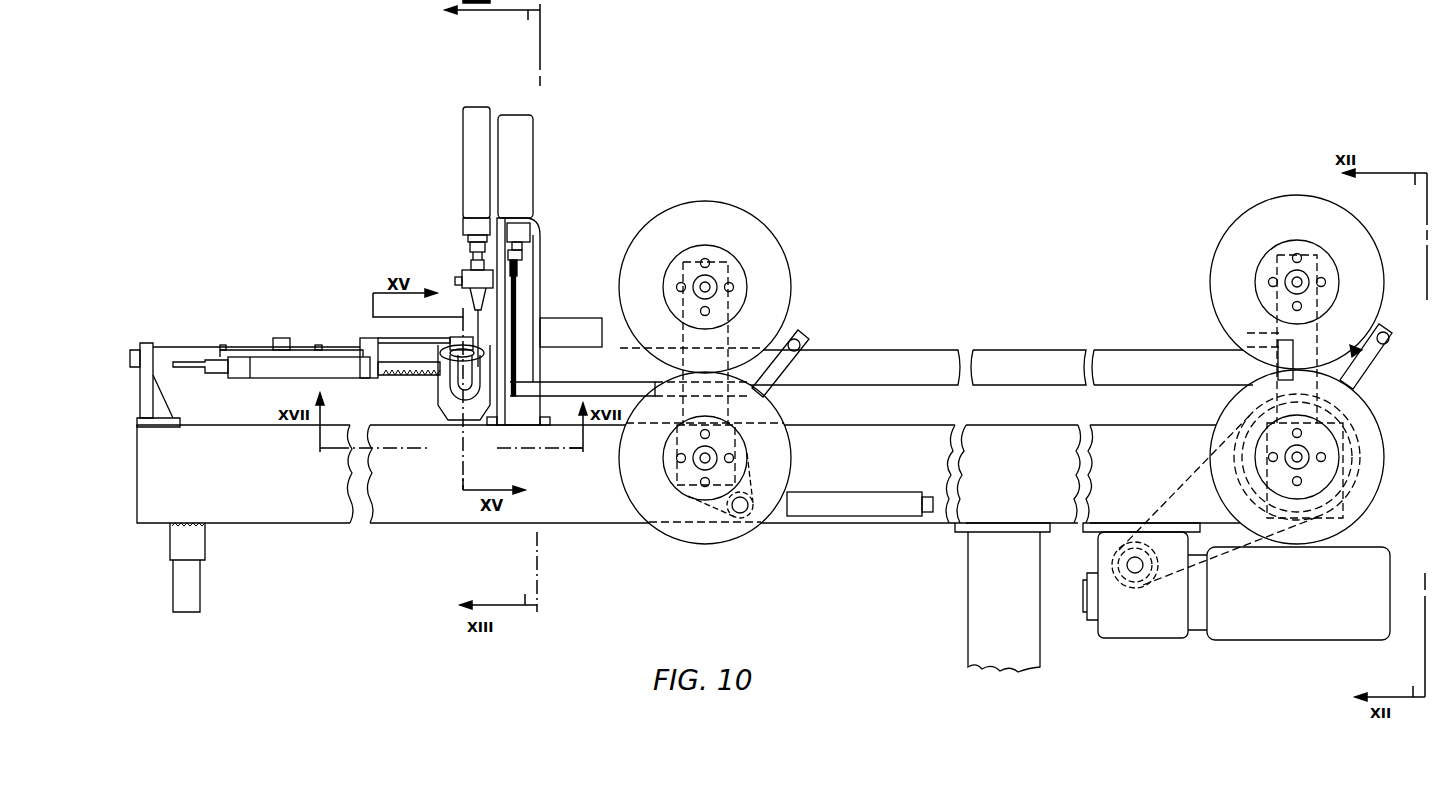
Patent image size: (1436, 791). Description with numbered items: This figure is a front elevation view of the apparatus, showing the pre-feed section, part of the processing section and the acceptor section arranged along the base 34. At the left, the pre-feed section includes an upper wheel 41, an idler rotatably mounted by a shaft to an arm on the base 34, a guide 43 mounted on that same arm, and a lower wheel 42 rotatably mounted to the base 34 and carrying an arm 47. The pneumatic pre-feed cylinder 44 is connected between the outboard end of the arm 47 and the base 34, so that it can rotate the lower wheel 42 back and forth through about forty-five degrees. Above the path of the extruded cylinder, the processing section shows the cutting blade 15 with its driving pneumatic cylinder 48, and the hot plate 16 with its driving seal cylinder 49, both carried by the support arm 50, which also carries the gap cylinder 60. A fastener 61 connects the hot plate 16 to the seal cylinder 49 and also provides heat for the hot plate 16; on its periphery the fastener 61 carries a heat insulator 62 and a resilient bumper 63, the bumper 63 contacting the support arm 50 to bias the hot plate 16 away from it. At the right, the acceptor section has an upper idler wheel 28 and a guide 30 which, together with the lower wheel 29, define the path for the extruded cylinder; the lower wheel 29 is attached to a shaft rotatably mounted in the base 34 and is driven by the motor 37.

The cutting blade 15 is at (515, 297).
The hot plate 16 is at (478, 310).
The upper wheel 28 is at (1357, 258).
The lower wheel 29 is at (1366, 470).
The guide 30 is at (1368, 360).
The base 34 is at (1004, 450).
The motor 37 is at (1296, 623).
The upper wheel 41 is at (762, 255).
The lower wheel 42 is at (680, 545).
The guide 43 is at (790, 335).
The pneumatic pre-feed cylinder 44 is at (848, 505).
The arm 47 is at (745, 483).
The driving pneumatic cylinder 48 is at (510, 185).
The seal cylinder 49 is at (477, 178).
The support arm 50 is at (527, 287).
The gap cylinder 60 is at (562, 327).
The fastener 61 is at (478, 250).
The heat insulator 62 is at (475, 265).
The resilient bumper 63 is at (462, 282).